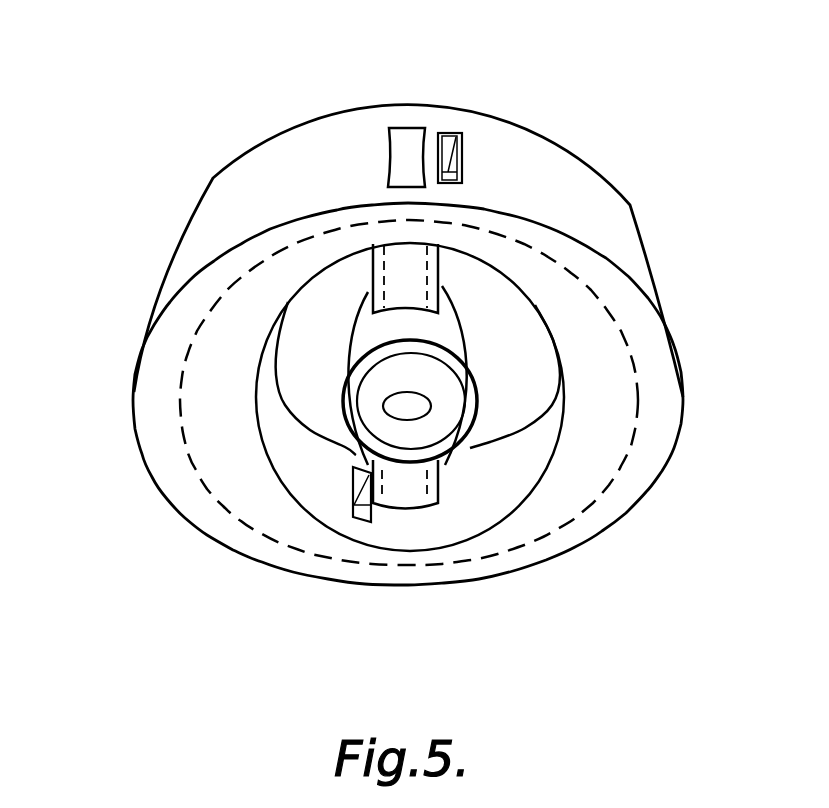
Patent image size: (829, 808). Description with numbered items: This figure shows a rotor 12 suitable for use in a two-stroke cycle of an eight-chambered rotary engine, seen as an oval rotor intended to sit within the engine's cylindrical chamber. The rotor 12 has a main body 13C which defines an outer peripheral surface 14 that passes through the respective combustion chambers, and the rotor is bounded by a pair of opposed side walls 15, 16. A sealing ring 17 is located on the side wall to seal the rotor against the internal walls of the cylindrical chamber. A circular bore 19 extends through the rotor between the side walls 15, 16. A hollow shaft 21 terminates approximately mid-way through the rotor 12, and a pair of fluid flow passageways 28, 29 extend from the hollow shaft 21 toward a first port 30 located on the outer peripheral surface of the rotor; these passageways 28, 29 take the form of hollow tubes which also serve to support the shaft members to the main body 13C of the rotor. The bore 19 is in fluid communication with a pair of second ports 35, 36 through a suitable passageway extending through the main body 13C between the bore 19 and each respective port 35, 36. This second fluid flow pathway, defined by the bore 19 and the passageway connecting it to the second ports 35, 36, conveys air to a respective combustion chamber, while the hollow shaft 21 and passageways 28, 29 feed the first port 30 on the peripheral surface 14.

The rotor 12 is at (408, 221).
The main body 13C is at (389, 394).
The outer peripheral surface 14 is at (408, 221).
The side wall 15 is at (175, 435).
The side wall 16 is at (532, 122).
The sealing ring 17 is at (630, 452).
The circular bore 19 is at (325, 357).
The hollow shaft 21 is at (440, 406).
The fluid flow passageway 28 is at (430, 265).
The fluid flow passageway 29 is at (401, 503).
The first port 30 is at (408, 140).
The second port 35 is at (450, 140).
The second port 36 is at (360, 490).